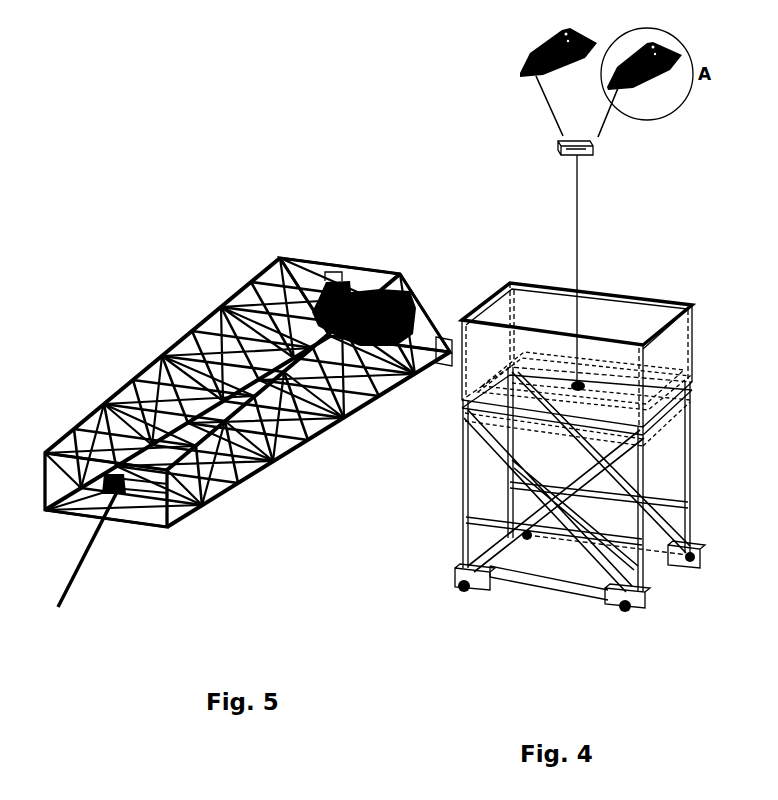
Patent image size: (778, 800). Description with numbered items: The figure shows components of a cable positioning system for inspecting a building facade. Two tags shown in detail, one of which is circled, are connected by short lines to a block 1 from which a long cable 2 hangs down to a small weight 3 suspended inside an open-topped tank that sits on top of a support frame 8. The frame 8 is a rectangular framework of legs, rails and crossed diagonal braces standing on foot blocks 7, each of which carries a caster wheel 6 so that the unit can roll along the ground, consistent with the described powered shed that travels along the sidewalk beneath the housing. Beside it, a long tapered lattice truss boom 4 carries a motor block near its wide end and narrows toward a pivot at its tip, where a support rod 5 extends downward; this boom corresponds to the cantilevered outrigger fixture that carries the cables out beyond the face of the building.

In FIG. 4, the hanger block 1 is at (594, 146).
In FIG. 4, the suspension wire 2 is at (580, 208).
In FIG. 4, the weight sensor ball 3 is at (588, 383).
In FIG. 5, the truss boom 4 is at (180, 340).
In FIG. 5, the support rod 5 is at (121, 495).
In FIG. 4, the caster wheel 6 is at (457, 581).
In FIG. 4, the foot block 7 is at (456, 566).
In FIG. 4, the support frame 8 is at (659, 470).